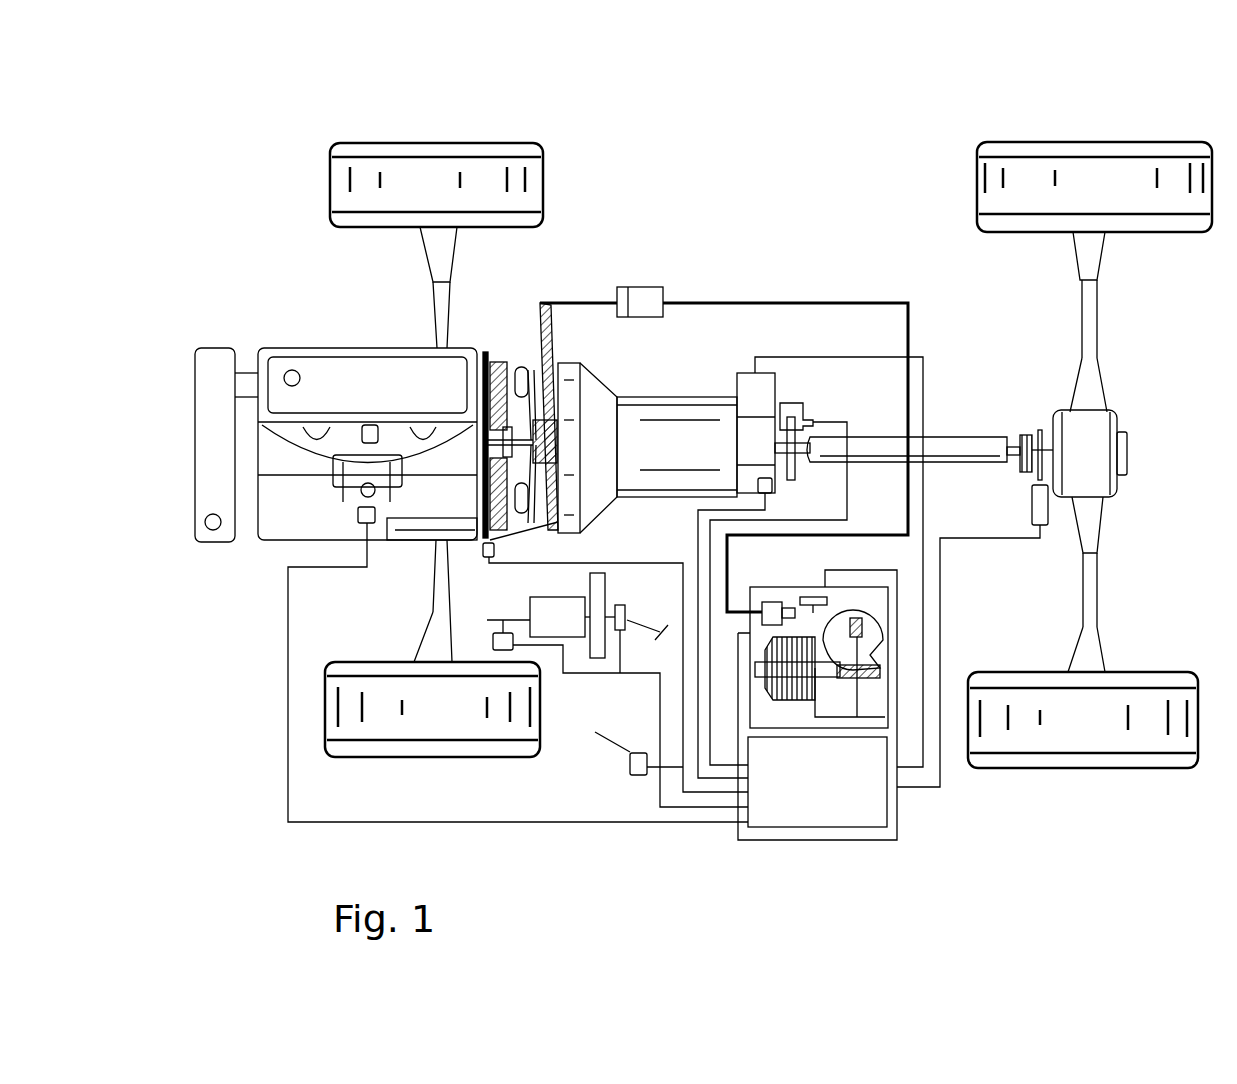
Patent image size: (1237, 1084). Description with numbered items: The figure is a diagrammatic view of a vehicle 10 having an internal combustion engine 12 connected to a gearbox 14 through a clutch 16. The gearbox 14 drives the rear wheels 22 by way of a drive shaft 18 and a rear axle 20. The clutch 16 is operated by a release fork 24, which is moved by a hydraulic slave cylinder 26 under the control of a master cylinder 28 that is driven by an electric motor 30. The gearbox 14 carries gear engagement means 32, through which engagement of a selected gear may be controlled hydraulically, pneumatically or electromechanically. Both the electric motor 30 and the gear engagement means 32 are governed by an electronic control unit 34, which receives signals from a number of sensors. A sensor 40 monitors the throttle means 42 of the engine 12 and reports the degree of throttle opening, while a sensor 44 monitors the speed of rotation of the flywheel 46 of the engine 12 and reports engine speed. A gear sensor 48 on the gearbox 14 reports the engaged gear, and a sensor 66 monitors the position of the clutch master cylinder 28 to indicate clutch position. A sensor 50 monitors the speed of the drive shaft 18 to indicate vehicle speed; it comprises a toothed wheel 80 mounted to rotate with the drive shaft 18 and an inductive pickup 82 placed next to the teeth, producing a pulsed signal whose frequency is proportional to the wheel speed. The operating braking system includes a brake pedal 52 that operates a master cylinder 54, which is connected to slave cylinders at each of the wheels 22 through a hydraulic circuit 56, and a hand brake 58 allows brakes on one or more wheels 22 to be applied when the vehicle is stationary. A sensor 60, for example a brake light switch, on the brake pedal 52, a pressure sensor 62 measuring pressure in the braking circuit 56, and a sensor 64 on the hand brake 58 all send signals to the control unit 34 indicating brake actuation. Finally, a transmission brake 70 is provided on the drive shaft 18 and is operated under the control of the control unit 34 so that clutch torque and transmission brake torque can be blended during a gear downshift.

The vehicle 10 is at (776, 148).
The internal combustion engine 12 is at (342, 378).
The gearbox 14 is at (675, 408).
The clutch 16 is at (510, 330).
The drive shaft 18 is at (955, 440).
The rear axle 20 is at (1120, 420).
The rear wheels 22 is at (1112, 157).
The release fork 24 is at (550, 325).
The hydraulic slave cylinder 26 is at (645, 295).
The master cylinder 28 is at (762, 602).
The electric motor 30 is at (818, 692).
The gear engagement means 32 is at (748, 378).
The electronic control unit 34 is at (836, 812).
The sensor 40 is at (362, 523).
The throttle means 42 is at (362, 483).
The sensor 44 is at (486, 562).
The flywheel 46 is at (485, 355).
The gear sensor 48 is at (772, 485).
The sensor 50 is at (1030, 507).
The brake pedal 52 is at (655, 650).
The master cylinder 54 is at (560, 617).
The hydraulic circuit 56 is at (599, 713).
The hand brake 58 is at (600, 738).
The sensor 60 is at (622, 612).
The pressure sensor 62 is at (503, 620).
The sensor 64 is at (630, 770).
The sensor 66 is at (810, 597).
The transmission brake 70 is at (800, 405).
The toothed wheel 80 is at (1027, 435).
The inductive pickup 82 is at (1040, 528).